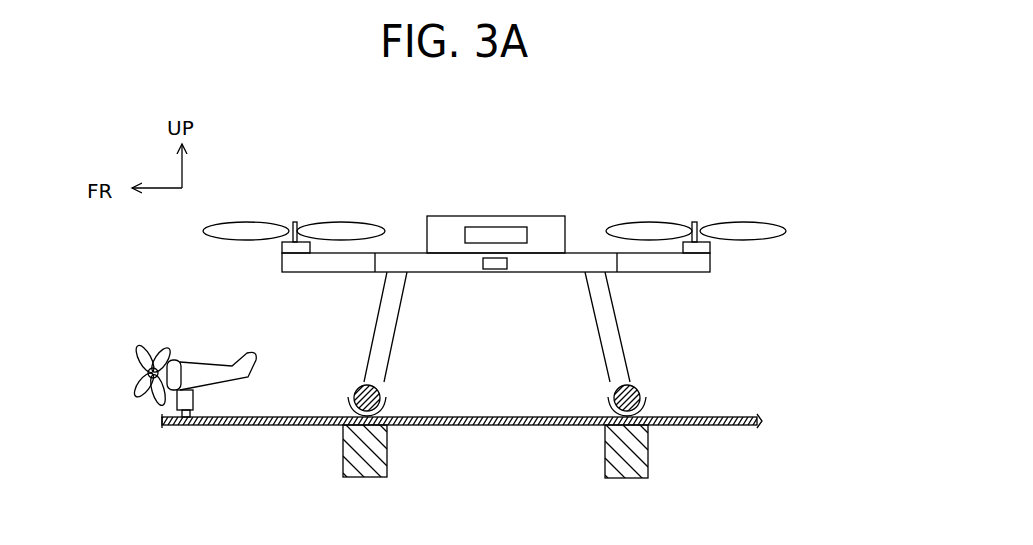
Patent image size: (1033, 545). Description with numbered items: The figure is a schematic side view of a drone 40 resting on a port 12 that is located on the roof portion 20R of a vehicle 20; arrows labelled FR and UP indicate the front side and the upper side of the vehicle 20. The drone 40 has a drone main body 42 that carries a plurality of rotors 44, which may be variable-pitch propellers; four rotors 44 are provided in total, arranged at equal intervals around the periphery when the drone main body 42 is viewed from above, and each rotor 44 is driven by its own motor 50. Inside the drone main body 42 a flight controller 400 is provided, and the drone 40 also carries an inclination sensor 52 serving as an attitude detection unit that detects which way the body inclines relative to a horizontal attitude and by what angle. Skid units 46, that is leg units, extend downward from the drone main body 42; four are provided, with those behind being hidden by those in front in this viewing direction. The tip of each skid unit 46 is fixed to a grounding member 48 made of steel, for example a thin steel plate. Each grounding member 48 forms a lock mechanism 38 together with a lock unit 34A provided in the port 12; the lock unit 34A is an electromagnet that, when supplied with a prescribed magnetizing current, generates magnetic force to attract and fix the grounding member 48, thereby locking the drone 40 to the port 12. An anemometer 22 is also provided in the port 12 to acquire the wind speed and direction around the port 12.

The port 12 is at (330, 398).
The vehicle 20 is at (750, 402).
The roof portion 20R is at (712, 415).
The anemometer 22 is at (205, 360).
The lock unit 34A is at (388, 453).
The lock mechanism 38 is at (335, 432).
The drone 40 is at (583, 172).
The drone main body 42 is at (577, 242).
The rotor 44 is at (245, 222).
The skid unit 46 is at (377, 318).
The grounding member 48 is at (392, 410).
The motor 50 is at (281, 248).
The inclination sensor 52 is at (495, 273).
The flight controller 400 is at (497, 216).